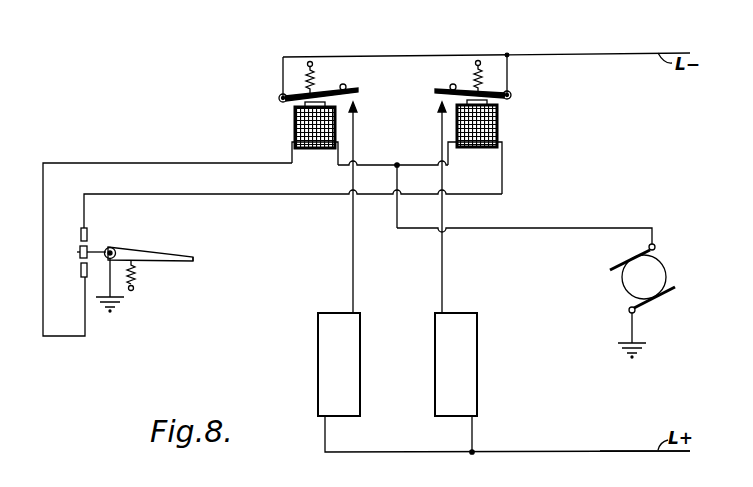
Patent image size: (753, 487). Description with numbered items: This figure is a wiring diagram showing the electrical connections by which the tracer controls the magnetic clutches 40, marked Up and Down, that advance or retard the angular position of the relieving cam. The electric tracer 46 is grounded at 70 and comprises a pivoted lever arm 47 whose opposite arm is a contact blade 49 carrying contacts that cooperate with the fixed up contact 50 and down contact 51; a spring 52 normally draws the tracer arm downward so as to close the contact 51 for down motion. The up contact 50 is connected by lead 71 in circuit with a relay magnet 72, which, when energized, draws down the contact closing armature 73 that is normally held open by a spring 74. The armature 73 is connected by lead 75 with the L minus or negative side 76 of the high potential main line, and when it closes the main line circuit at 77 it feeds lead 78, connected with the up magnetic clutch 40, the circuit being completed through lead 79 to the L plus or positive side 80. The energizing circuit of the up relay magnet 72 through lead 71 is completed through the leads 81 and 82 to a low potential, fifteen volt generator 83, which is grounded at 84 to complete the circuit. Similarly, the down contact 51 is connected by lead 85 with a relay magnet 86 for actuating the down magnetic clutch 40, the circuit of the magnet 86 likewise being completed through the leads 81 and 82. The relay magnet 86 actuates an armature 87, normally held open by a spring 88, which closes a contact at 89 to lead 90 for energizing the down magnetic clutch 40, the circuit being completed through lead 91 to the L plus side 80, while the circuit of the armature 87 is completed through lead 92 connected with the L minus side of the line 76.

The magnetic clutches 40 is at (435, 362).
The electric tracer 46 is at (124, 247).
The lever arm 47 is at (172, 257).
The contact blade 49 is at (78, 252).
The up contact 50 is at (82, 272).
The down contact 51 is at (90, 235).
The spring 52 is at (138, 271).
The ground 70 is at (120, 298).
The lead 71 is at (178, 163).
The relay magnet 72 is at (297, 130).
The contact closing armature 73 is at (360, 96).
The spring 74 is at (313, 90).
The lead 75 is at (283, 76).
The negative side of main line 76 is at (579, 53).
The contact 77 is at (360, 108).
The lead 78 is at (355, 272).
The lead 79 is at (327, 436).
The positive side of main line 80 is at (609, 450).
The lead 81 is at (380, 160).
The lead 82 is at (395, 228).
The low potential generator 83 is at (668, 270).
The ground 84 is at (640, 338).
The lead 85 is at (246, 197).
The relay magnet 86 is at (500, 125).
The armature 87 is at (460, 89).
The spring 88 is at (480, 90).
The contact 89 is at (440, 104).
The lead 90 is at (444, 266).
The lead 91 is at (474, 434).
The lead 92 is at (510, 80).